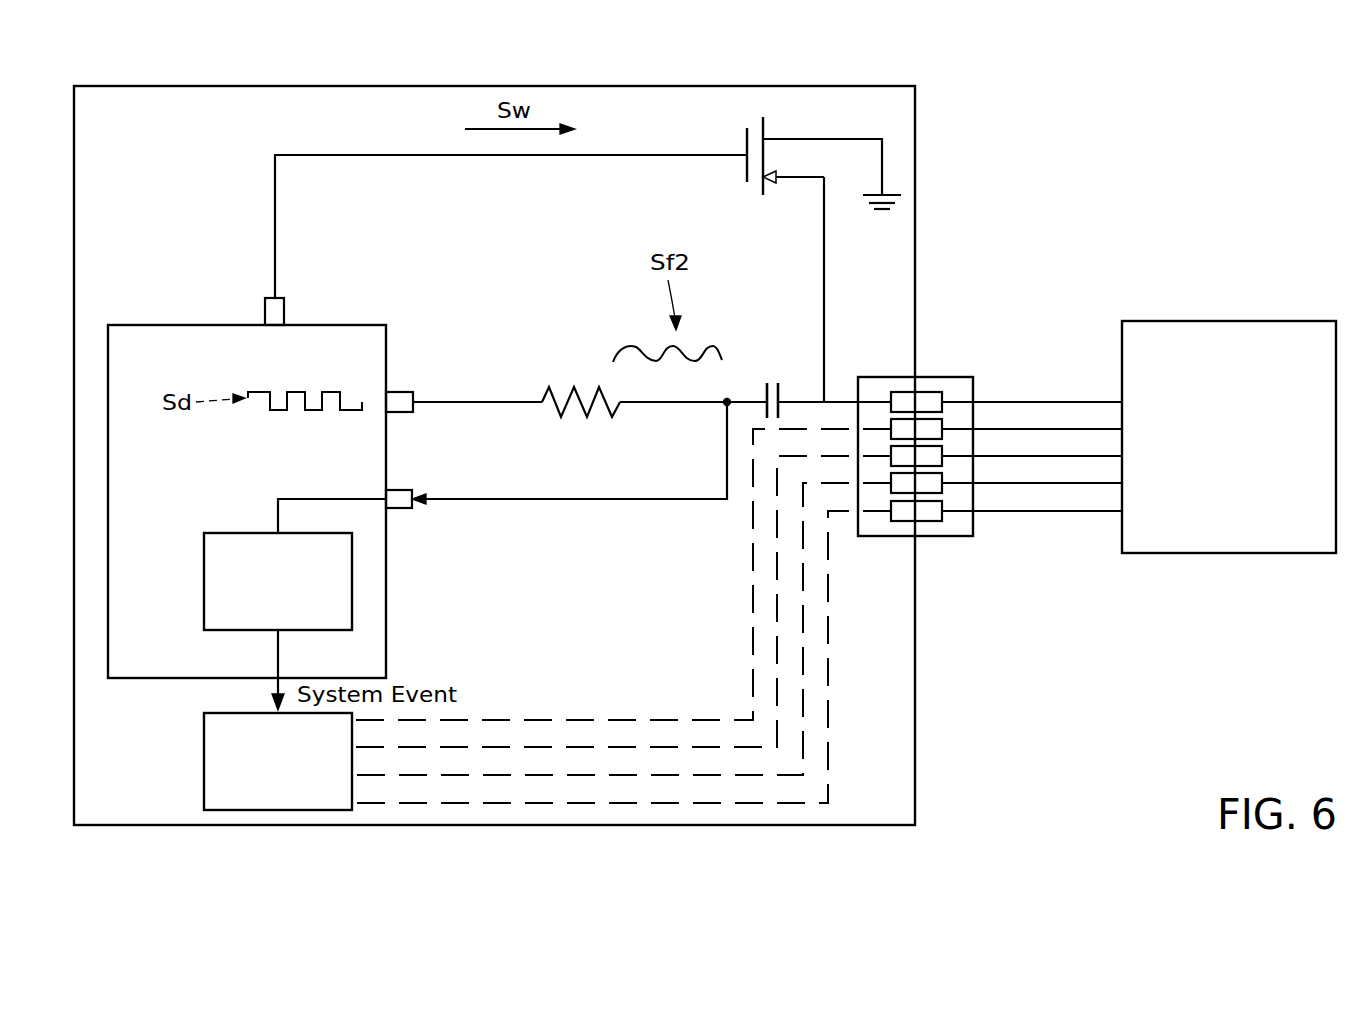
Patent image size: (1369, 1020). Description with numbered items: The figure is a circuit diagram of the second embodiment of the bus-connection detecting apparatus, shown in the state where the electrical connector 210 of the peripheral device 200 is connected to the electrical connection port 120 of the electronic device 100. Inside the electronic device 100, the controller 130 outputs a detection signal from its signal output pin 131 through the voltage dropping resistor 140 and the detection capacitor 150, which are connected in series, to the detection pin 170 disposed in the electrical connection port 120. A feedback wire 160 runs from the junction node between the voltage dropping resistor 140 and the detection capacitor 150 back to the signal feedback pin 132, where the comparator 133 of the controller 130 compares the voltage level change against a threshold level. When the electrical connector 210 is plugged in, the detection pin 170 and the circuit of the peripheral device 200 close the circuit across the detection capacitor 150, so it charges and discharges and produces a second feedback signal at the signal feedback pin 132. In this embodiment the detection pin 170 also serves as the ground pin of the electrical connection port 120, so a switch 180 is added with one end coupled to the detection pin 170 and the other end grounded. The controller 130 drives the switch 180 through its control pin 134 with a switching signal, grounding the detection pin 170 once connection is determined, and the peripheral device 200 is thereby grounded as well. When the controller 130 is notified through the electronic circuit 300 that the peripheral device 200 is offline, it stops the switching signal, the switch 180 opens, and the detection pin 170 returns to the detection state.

The electronic device 100 is at (347, 129).
The electrical connection port 120 is at (892, 538).
The controller 130 is at (273, 362).
The signal output pin 131 is at (403, 387).
The signal feedback pin 132 is at (400, 510).
The comparator 133 is at (258, 607).
The control pin 134 is at (262, 310).
The voltage dropping resistor 140 is at (584, 358).
The detection capacitor 150 is at (772, 364).
The feedback wire 160 is at (545, 498).
The detection pin 170 is at (902, 400).
The switch 180 is at (752, 96).
The peripheral device 200 is at (1208, 469).
The electrical connector 210 is at (945, 375).
The electronic circuit 300 is at (258, 802).